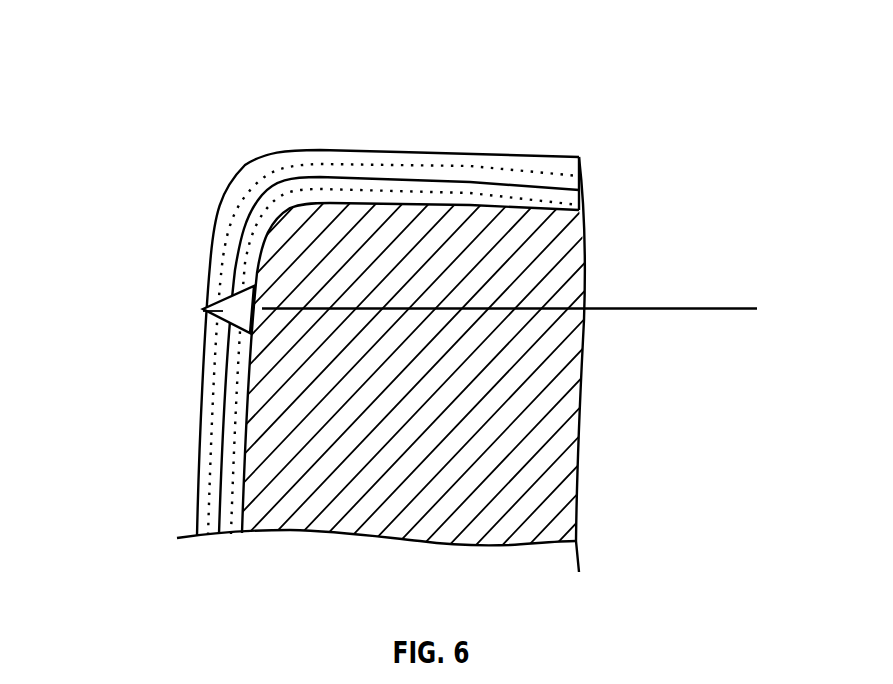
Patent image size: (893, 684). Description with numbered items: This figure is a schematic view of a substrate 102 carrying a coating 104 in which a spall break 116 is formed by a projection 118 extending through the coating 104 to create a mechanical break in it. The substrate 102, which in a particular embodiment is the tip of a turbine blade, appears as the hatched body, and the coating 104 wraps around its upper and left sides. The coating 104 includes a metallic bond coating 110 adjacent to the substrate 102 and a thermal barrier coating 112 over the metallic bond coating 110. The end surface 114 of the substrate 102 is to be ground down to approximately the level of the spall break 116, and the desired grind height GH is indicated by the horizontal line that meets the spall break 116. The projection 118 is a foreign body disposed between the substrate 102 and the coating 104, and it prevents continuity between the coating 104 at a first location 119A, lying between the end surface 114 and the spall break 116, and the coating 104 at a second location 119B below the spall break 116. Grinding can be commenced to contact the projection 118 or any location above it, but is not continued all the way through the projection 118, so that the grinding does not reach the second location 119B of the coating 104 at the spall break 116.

The substrate 102 is at (558, 397).
The coating 104 is at (614, 189).
The metallic bond coating (MBC) 110 is at (583, 205).
The thermal barrier coating (TBC) 112 is at (529, 166).
The end surface 114 is at (425, 203).
The spall break 116 is at (190, 307).
The projection 118 is at (203, 311).
The first location 119A is at (212, 228).
The second location 119B is at (208, 386).
The grind height GH is at (686, 308).